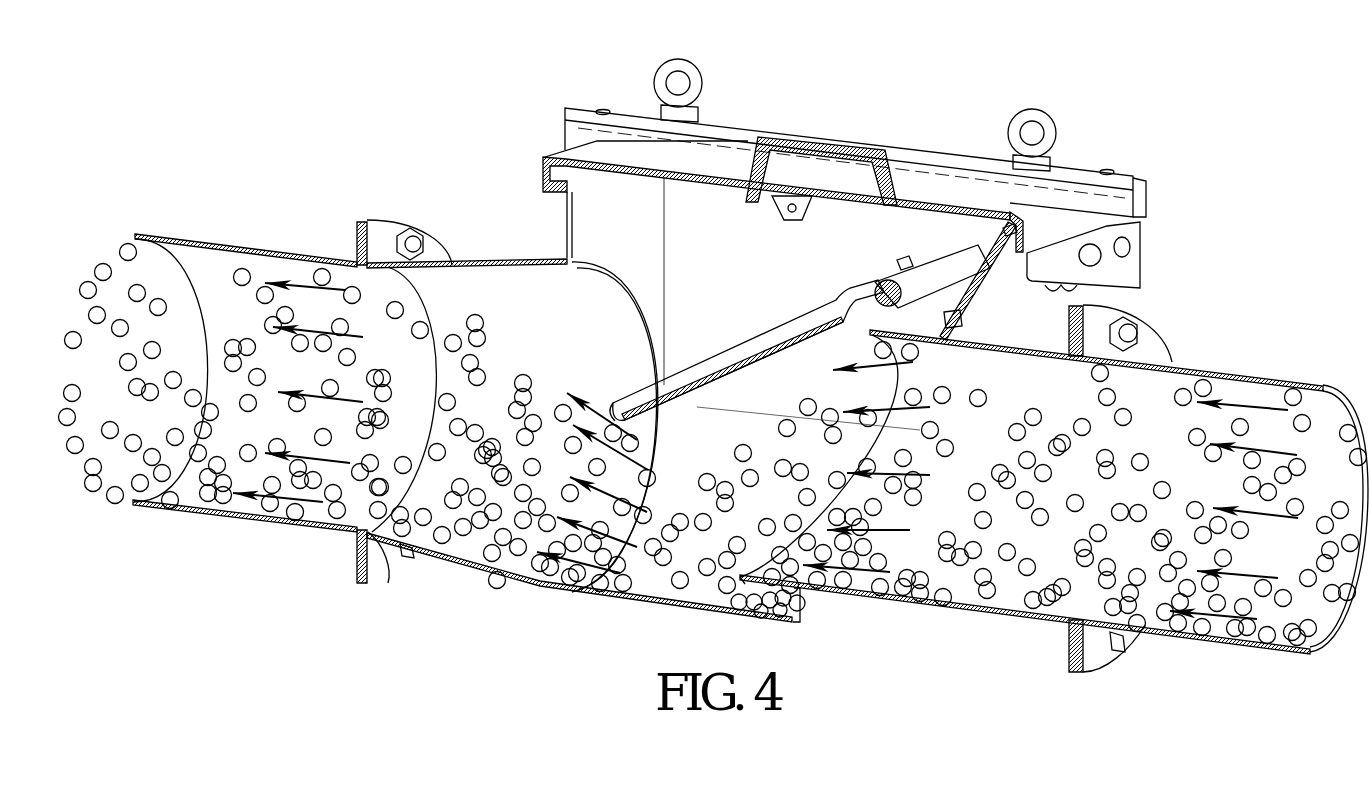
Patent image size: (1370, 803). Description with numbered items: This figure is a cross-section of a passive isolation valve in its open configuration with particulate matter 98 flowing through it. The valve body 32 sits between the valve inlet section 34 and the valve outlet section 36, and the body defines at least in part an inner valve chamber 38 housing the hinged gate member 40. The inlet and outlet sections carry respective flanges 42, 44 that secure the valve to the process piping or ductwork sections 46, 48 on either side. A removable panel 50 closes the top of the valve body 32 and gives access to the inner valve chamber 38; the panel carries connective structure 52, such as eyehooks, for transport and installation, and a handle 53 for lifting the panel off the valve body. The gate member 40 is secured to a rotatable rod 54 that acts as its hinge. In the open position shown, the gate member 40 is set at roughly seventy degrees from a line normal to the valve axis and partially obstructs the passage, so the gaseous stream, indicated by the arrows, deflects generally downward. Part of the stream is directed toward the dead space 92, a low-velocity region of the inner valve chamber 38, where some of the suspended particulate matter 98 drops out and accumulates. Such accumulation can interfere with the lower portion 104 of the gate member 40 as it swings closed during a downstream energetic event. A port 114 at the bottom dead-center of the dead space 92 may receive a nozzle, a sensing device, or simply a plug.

The valve body 32 is at (565, 218).
The valve inlet section 34 is at (918, 628).
The valve outlet section 36 is at (473, 572).
The inner valve chamber 38 is at (728, 246).
The gate member 40 is at (733, 365).
The flange 42 is at (1070, 660).
The flange 44 is at (384, 565).
The ductwork section 46 is at (1212, 652).
The ductwork section 48 is at (238, 522).
The removable panel 50 is at (1058, 228).
The connective structure 52 is at (667, 63).
The handle 53 is at (822, 143).
The rotatable rod 54 is at (937, 280).
The dead space 92 is at (733, 590).
The particulate matter 98 is at (1185, 390).
The lower portion 104 is at (620, 406).
The port 114 is at (808, 620).